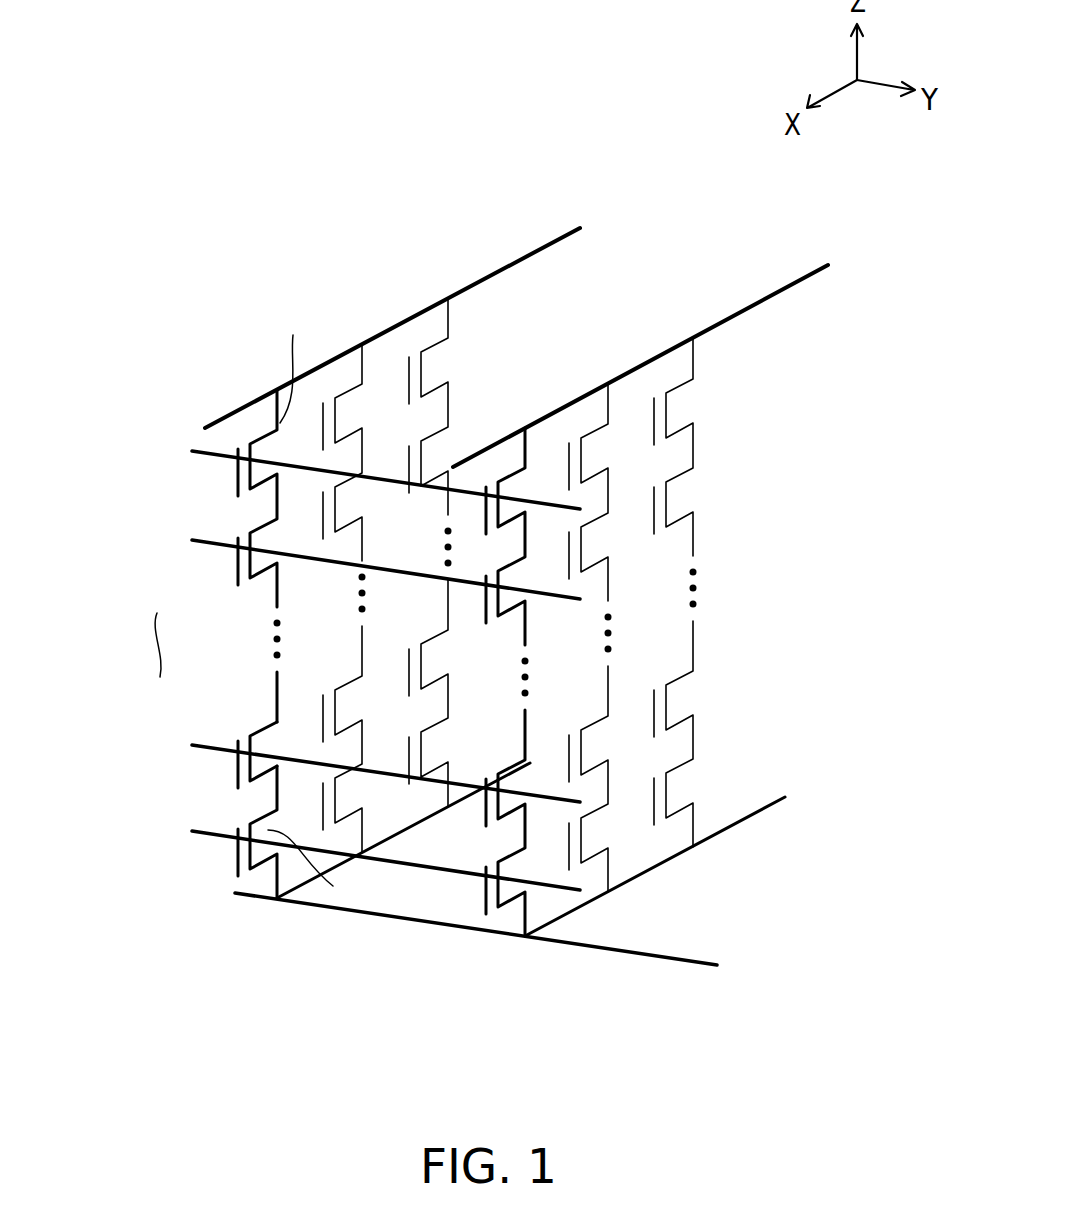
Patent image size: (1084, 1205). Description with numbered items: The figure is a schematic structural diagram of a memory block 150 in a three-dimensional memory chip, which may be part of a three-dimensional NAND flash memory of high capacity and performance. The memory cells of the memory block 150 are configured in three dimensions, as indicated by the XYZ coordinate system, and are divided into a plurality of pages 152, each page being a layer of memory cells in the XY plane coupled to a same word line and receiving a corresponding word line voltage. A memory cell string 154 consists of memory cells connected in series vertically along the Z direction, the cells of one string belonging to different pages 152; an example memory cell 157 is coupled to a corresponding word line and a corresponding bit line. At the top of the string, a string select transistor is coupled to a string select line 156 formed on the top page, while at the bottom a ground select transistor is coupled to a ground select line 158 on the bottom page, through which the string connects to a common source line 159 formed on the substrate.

The memory block 150 is at (854, 1054).
The pages 152 is at (123, 530).
The memory cell string 154 is at (285, 927).
The string select line 156 is at (155, 432).
The memory cell 157 is at (275, 739).
The ground select line 158 is at (165, 853).
The common source line 159 is at (760, 952).